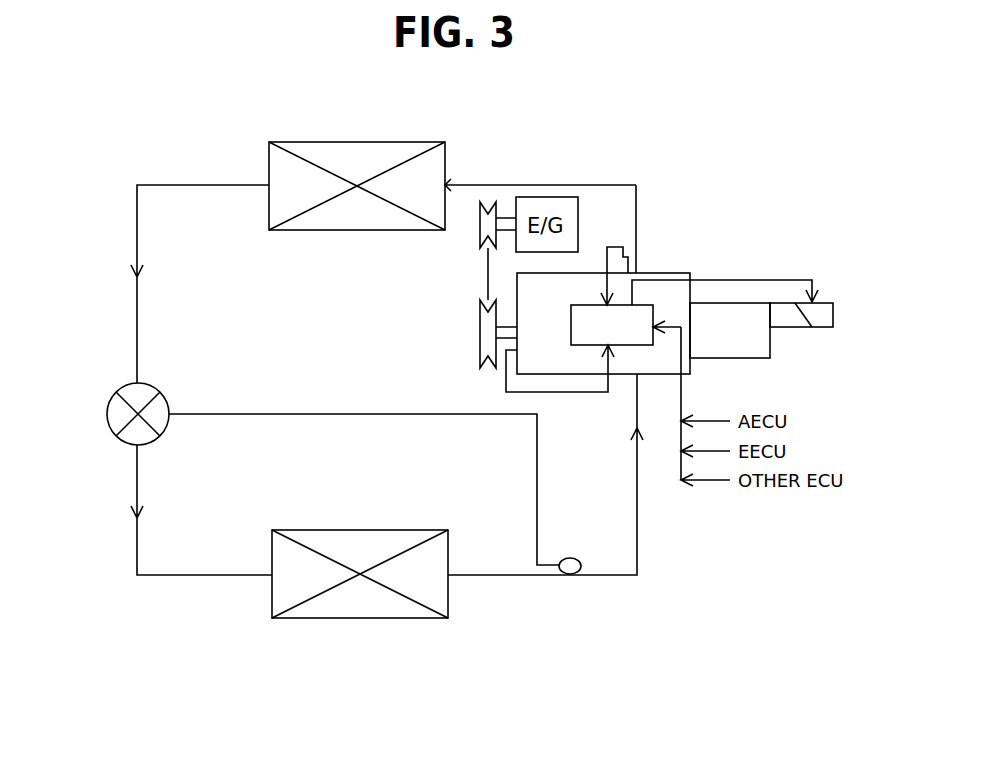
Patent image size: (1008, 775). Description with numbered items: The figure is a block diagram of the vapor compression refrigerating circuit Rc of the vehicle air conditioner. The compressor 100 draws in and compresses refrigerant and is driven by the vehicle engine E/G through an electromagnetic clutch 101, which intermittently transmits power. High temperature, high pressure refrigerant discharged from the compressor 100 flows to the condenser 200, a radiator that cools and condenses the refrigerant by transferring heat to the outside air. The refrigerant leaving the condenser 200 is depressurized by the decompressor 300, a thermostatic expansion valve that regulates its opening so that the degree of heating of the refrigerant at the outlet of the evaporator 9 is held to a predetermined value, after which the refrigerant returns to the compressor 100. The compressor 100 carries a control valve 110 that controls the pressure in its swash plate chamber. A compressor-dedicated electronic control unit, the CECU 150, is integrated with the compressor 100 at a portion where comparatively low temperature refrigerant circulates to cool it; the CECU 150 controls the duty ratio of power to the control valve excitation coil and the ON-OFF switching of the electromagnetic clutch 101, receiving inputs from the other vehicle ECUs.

The vapor compression refrigerating circuit Rc is at (586, 154).
The condenser 200 is at (400, 142).
The evaporator 9 is at (297, 620).
The decompressor 300 is at (120, 388).
The electromagnetic clutch 101 is at (480, 333).
The compressor 100 is at (601, 268).
The compressor-dedicated electronic control unit (CECU) 150 is at (642, 303).
The control valve 110 is at (737, 302).